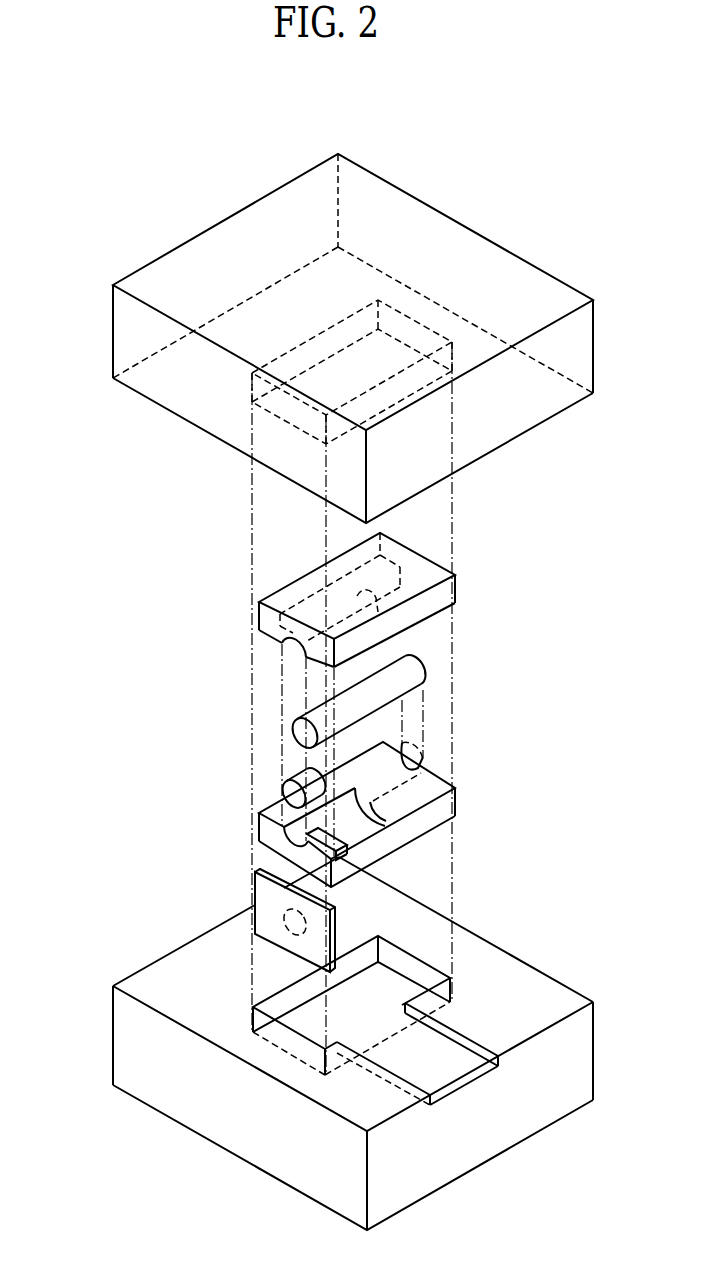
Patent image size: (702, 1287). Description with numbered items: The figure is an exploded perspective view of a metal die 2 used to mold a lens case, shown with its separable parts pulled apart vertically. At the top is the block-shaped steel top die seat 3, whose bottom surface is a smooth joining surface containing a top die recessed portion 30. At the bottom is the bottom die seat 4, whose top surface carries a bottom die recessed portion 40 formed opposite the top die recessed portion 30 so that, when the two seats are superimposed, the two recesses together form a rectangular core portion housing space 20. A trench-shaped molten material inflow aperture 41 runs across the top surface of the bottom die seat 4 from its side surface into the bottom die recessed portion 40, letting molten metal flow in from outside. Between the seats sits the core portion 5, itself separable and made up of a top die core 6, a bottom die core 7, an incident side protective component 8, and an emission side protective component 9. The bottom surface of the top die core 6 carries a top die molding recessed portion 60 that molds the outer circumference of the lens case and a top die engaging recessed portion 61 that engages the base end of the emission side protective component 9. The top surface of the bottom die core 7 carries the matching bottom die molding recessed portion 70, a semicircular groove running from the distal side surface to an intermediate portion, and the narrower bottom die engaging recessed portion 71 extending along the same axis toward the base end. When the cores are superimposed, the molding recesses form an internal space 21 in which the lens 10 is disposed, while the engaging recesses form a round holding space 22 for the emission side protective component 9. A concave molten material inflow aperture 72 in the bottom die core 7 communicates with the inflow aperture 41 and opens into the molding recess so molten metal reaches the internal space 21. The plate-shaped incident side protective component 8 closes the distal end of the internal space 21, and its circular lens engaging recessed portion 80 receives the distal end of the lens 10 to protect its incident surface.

The metal die 2 is at (554, 126).
The top die seat 3 is at (113, 350).
The top die recessed portion 30 is at (415, 322).
The bottom die seat 4 is at (113, 1044).
The bottom die recessed portion 40 is at (430, 962).
The molten material inflow aperture 41 is at (425, 1048).
The core portion housing space 20 is at (407, 938).
The core portion 5 is at (52, 728).
The top die core 6 is at (258, 618).
The top die molding recessed portion 60 is at (313, 617).
The top die engaging recessed portion 61 is at (384, 575).
The emission side protective component 9 is at (296, 728).
The lens 10 is at (287, 790).
The internal space 21 is at (322, 789).
The holding space 22 is at (392, 757).
The bottom die core 7 is at (262, 836).
The bottom die molding recessed portion 70 is at (264, 848).
The bottom die engaging recessed portion 71 is at (418, 756).
The molten material inflow aperture 72 is at (360, 830).
The incident side protective component 8 is at (257, 900).
The lens engaging recessed portion 80 is at (283, 923).